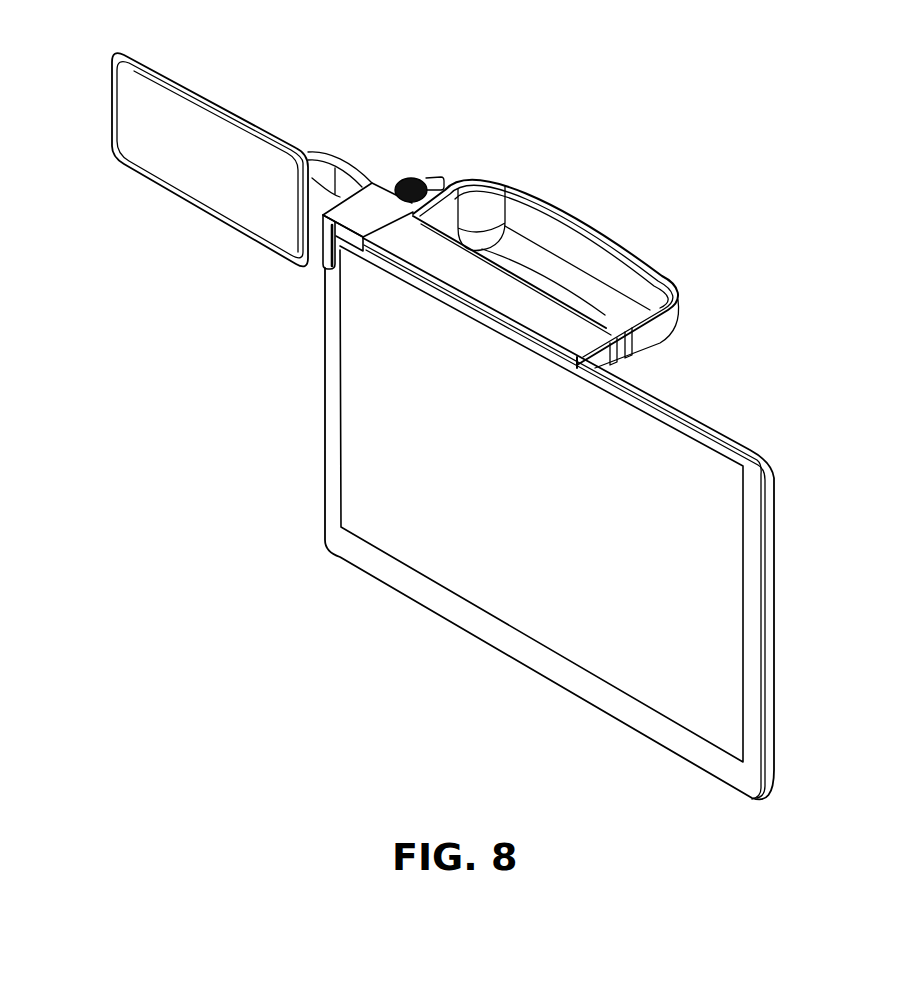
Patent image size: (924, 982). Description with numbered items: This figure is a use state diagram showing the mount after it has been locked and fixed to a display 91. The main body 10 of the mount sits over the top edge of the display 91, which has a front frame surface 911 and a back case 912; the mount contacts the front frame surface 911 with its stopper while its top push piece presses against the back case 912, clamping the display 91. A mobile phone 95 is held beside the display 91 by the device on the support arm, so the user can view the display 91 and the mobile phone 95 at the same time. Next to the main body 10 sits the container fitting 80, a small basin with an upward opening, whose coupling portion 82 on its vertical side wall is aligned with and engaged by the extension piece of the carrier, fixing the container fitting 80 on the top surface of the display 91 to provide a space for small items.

The main body 10 is at (368, 215).
The container fitting 80 is at (597, 258).
The coupling portion 82 is at (635, 353).
The display 91 is at (765, 638).
The front frame surface 911 is at (748, 510).
The back case 912 is at (740, 444).
The mobile phone 95 is at (210, 168).